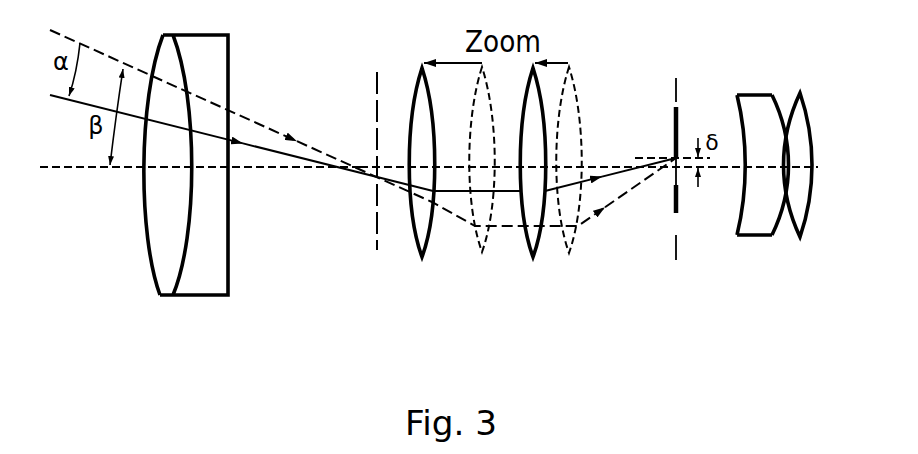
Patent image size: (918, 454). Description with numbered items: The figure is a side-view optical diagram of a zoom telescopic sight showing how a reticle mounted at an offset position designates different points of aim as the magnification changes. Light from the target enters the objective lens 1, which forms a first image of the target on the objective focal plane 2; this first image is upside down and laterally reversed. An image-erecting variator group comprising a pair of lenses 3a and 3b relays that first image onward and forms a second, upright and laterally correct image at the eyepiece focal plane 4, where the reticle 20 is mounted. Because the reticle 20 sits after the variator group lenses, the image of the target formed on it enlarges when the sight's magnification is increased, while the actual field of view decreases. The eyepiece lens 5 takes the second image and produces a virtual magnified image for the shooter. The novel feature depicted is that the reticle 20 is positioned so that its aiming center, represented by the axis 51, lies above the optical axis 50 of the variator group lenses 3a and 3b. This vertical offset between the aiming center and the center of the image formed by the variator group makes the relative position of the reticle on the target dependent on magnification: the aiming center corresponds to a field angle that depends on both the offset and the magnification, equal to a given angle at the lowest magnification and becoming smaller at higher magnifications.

The objective lens 1 is at (228, 267).
The objective focal plane 2 is at (377, 253).
The optical axis 50 is at (287, 168).
The variator group lens 3a is at (427, 240).
The variator group lens 3b is at (540, 243).
The aiming center axis 51 is at (653, 158).
The reticle 20 is at (675, 212).
The eyepiece focal plane 4 is at (676, 262).
The eyepiece lens 5 is at (818, 245).